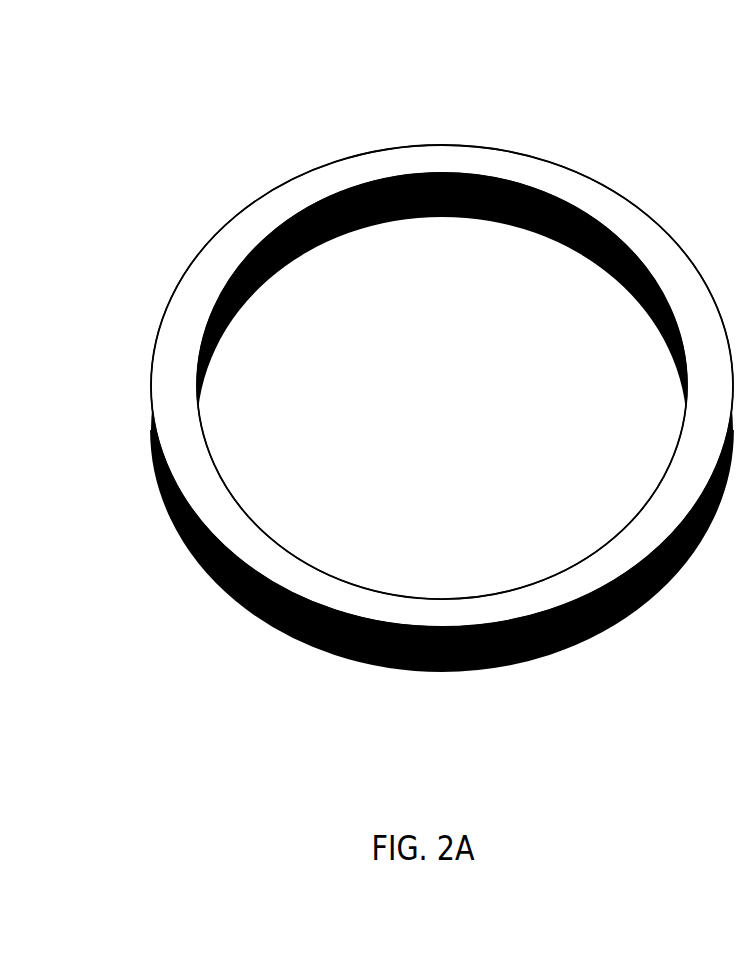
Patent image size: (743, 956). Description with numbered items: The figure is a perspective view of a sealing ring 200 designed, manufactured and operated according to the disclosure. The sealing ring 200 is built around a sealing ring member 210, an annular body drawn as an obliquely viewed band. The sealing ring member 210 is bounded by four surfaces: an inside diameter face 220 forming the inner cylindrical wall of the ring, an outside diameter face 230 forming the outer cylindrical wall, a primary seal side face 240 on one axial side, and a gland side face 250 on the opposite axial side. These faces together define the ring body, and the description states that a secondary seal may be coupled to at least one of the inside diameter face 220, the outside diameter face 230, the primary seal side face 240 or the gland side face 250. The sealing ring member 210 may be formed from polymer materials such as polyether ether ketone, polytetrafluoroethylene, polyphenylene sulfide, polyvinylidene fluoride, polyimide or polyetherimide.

The sealing ring 200 is at (371, 478).
The sealing ring member 210 is at (378, 150).
The inside diameter face 220 is at (466, 195).
The outside diameter face 230 is at (282, 612).
The primary seal side face 240 is at (547, 657).
The gland side face 250 is at (454, 614).